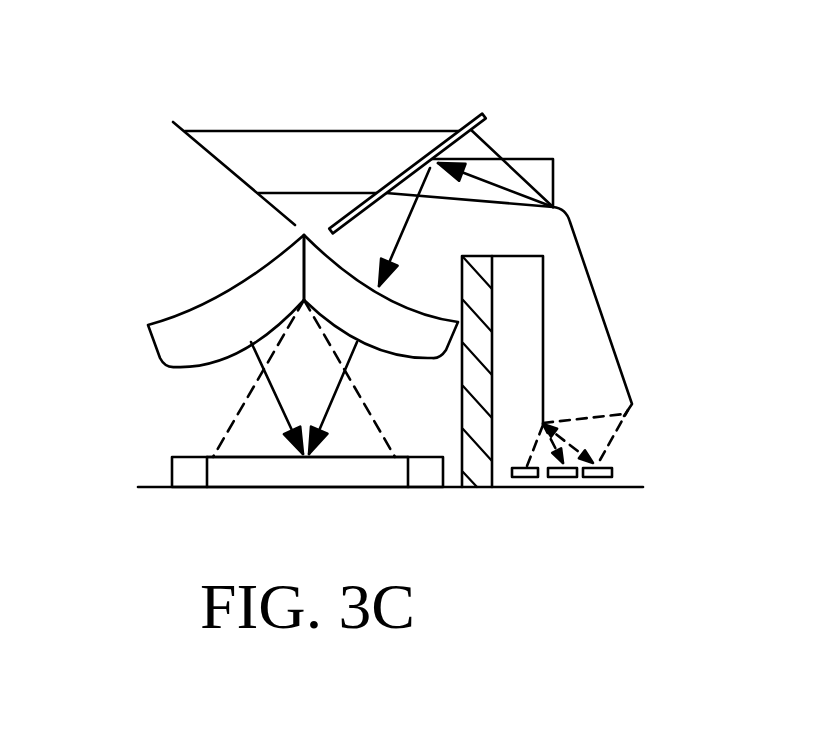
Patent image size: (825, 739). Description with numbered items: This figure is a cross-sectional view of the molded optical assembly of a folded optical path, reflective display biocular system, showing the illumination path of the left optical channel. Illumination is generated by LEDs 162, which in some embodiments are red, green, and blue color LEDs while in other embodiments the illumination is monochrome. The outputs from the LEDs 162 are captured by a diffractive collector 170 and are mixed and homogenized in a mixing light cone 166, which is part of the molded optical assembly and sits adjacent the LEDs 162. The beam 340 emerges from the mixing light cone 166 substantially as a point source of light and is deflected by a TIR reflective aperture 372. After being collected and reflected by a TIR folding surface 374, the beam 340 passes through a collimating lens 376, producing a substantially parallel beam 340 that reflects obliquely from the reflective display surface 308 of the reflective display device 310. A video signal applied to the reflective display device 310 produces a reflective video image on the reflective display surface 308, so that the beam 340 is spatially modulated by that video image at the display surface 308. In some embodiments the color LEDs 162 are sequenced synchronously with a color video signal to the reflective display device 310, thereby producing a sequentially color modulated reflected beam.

The LEDs 162 is at (528, 477).
The mixing light cone 166 is at (587, 338).
The diffractive collector 170 is at (640, 402).
The reflective display surface 308 is at (245, 452).
The reflective display device 310 is at (263, 478).
The beam 340 is at (408, 212).
The TIR reflective aperture 372 is at (563, 213).
The TIR folding surface 374 is at (413, 158).
The collimating lens 376 is at (405, 302).